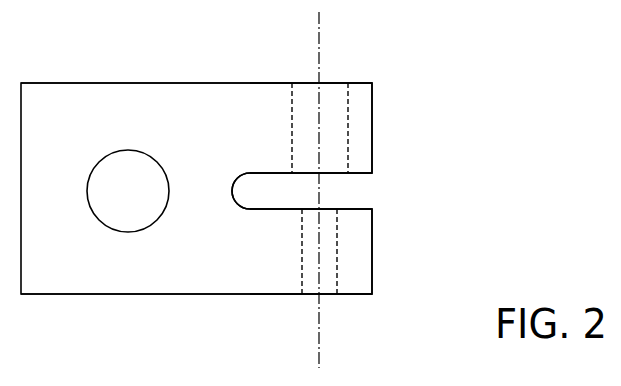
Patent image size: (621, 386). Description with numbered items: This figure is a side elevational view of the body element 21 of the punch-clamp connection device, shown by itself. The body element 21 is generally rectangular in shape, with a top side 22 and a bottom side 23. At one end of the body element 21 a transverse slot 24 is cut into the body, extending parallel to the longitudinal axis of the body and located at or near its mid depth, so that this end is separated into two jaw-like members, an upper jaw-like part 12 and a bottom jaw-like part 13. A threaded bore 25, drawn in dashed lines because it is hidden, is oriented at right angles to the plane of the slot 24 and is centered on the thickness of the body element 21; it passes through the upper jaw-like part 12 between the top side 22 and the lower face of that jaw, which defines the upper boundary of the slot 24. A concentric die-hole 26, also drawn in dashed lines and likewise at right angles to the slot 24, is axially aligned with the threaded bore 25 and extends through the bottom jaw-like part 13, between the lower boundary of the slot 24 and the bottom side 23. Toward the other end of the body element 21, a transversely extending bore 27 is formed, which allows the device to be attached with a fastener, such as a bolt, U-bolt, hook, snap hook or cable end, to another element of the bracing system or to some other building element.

The upper jaw-like part 12 is at (372, 100).
The bottom jaw-like part 13 is at (372, 238).
The body element 21 is at (176, 107).
The top side 22 is at (212, 83).
The bottom side 23 is at (170, 296).
The transverse slot 24 is at (295, 193).
The threaded bore 25 is at (348, 148).
The die-hole 26 is at (337, 280).
The transversely extending bore 27 is at (128, 151).